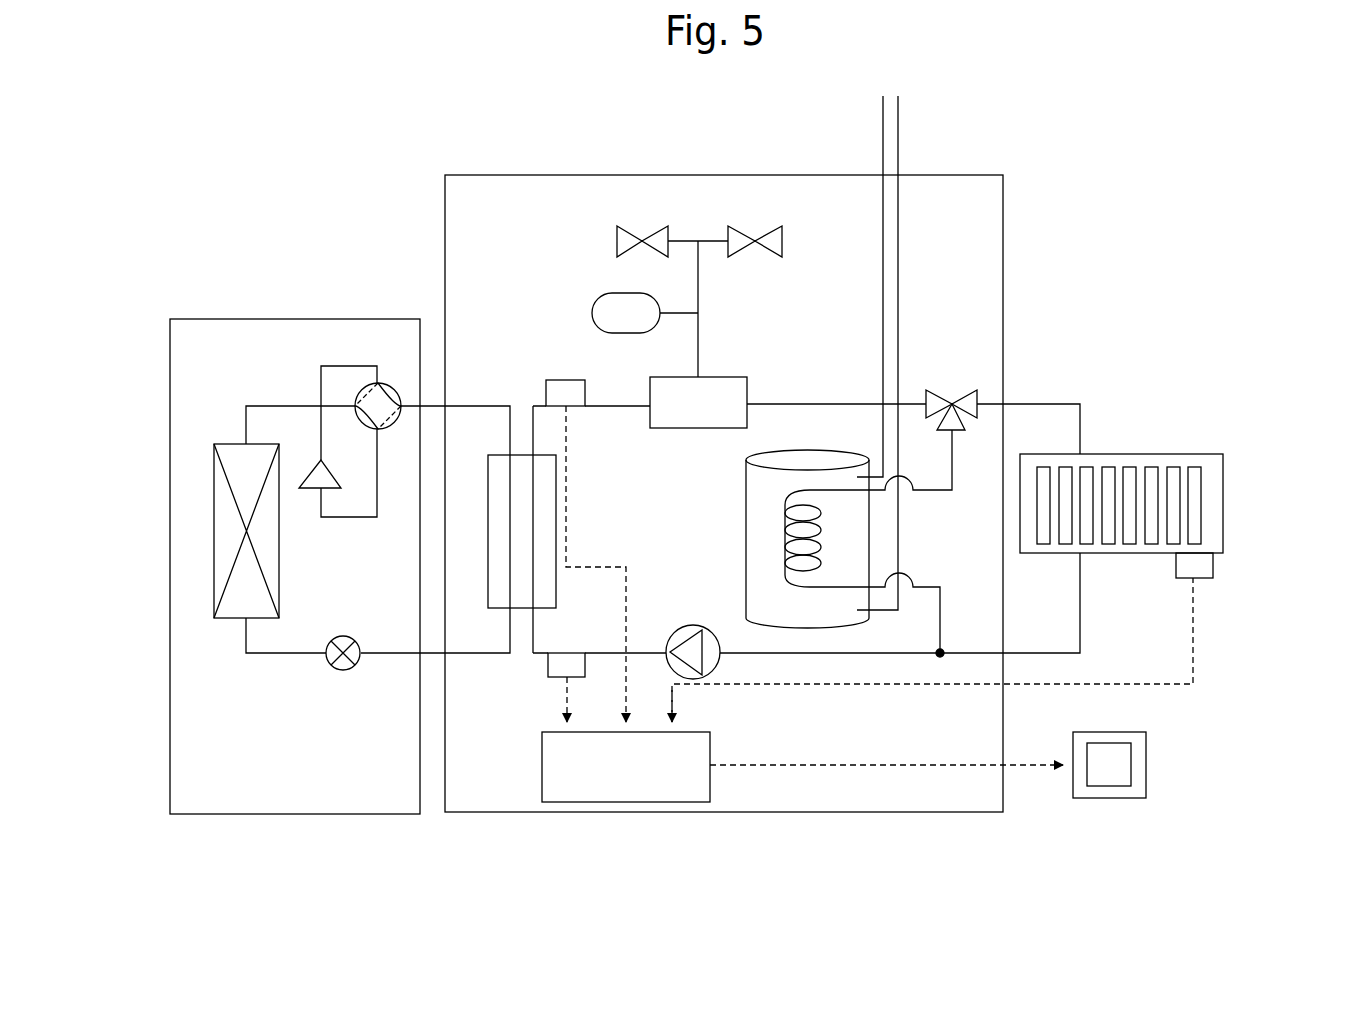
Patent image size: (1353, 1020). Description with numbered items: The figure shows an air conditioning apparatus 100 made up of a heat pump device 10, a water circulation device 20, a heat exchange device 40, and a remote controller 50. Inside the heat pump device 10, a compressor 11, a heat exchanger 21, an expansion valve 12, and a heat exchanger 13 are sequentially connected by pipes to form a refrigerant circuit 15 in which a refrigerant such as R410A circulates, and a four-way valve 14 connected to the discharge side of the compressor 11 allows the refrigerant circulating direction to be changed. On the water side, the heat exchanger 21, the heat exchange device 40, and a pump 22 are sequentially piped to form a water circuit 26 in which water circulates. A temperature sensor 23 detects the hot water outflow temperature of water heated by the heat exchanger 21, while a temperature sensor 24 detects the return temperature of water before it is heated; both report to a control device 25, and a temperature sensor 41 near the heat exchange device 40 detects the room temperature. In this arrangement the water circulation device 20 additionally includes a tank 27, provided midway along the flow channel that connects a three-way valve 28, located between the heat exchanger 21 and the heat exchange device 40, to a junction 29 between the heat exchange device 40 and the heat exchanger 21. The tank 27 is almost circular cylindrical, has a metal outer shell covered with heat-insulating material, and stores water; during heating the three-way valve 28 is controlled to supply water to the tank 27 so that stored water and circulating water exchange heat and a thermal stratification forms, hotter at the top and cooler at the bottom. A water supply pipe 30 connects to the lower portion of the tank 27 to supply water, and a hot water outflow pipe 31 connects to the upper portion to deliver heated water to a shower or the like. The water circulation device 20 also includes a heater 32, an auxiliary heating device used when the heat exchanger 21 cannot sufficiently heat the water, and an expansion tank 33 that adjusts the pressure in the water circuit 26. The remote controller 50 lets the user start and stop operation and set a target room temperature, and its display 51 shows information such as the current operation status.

The air conditioning apparatus 100 is at (1040, 136).
The heat pump device 10 is at (283, 318).
The compressor 11 is at (330, 475).
The expansion valve 12 is at (350, 639).
The heat exchanger 13 is at (281, 588).
The four-way valve 14 is at (386, 426).
The refrigerant circuit 15 is at (262, 406).
The water circulation device 20 is at (655, 172).
The heat exchanger 21 is at (490, 455).
The pump 22 is at (688, 625).
The temperature sensor 23 is at (588, 392).
The temperature sensor 24 is at (548, 678).
The control device 25 is at (710, 742).
The water circuit 26 is at (810, 403).
The tank 27 is at (797, 452).
The three-way valve 28 is at (945, 390).
The junction 29 is at (943, 648).
The water supply pipe 30 is at (899, 115).
The hot water outflow pipe 31 is at (882, 115).
The heater 32 is at (747, 380).
The expansion tank 33 is at (592, 306).
The heat exchange device 40 is at (1195, 453).
The temperature sensor 41 is at (1215, 575).
The remote controller 50 is at (1148, 778).
The display 51 is at (1133, 752).